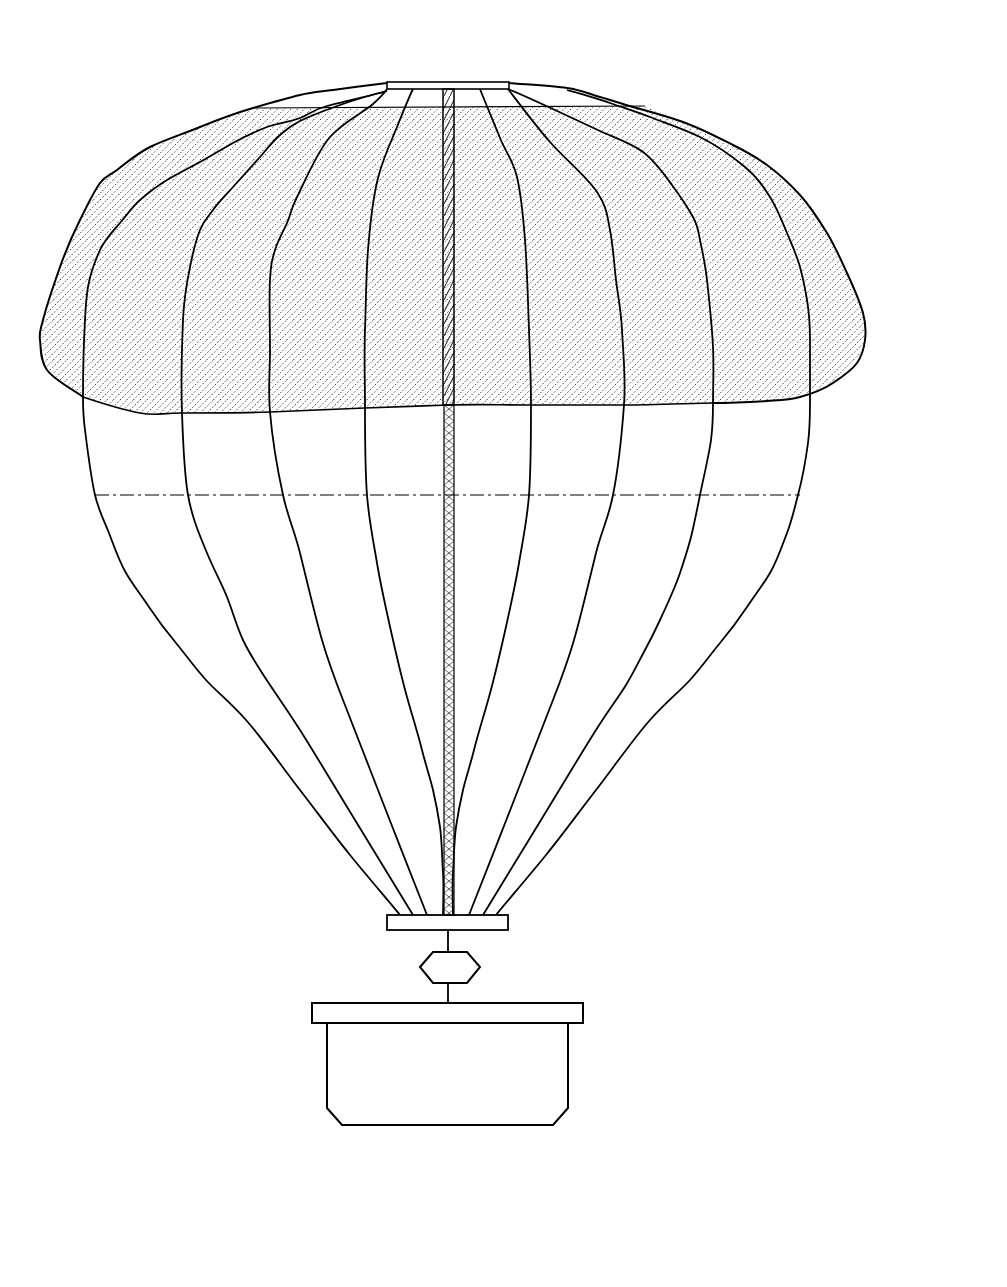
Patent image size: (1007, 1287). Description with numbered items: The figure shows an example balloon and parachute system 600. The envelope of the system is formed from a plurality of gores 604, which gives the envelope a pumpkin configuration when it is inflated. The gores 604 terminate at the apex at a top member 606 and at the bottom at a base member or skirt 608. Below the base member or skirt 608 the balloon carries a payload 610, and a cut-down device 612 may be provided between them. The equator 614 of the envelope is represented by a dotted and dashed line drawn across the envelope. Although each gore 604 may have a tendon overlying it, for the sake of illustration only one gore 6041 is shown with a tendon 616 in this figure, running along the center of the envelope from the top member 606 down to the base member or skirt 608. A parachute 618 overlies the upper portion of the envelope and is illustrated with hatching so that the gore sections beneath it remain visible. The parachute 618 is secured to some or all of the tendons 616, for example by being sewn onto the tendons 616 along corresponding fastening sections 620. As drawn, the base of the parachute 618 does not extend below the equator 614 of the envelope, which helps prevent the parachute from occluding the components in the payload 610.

The balloon and parachute system 600 is at (157, 1136).
The gores 604 is at (733, 582).
The gore 6041 is at (653, 837).
The top member 606 is at (467, 80).
The base member or skirt 608 is at (510, 920).
The payload 610 is at (573, 1062).
The cut-down device 612 is at (420, 965).
The equator 614 is at (172, 497).
The tendon 616 is at (443, 702).
The parachute 618 is at (758, 160).
The fastening sections 620 is at (455, 203).